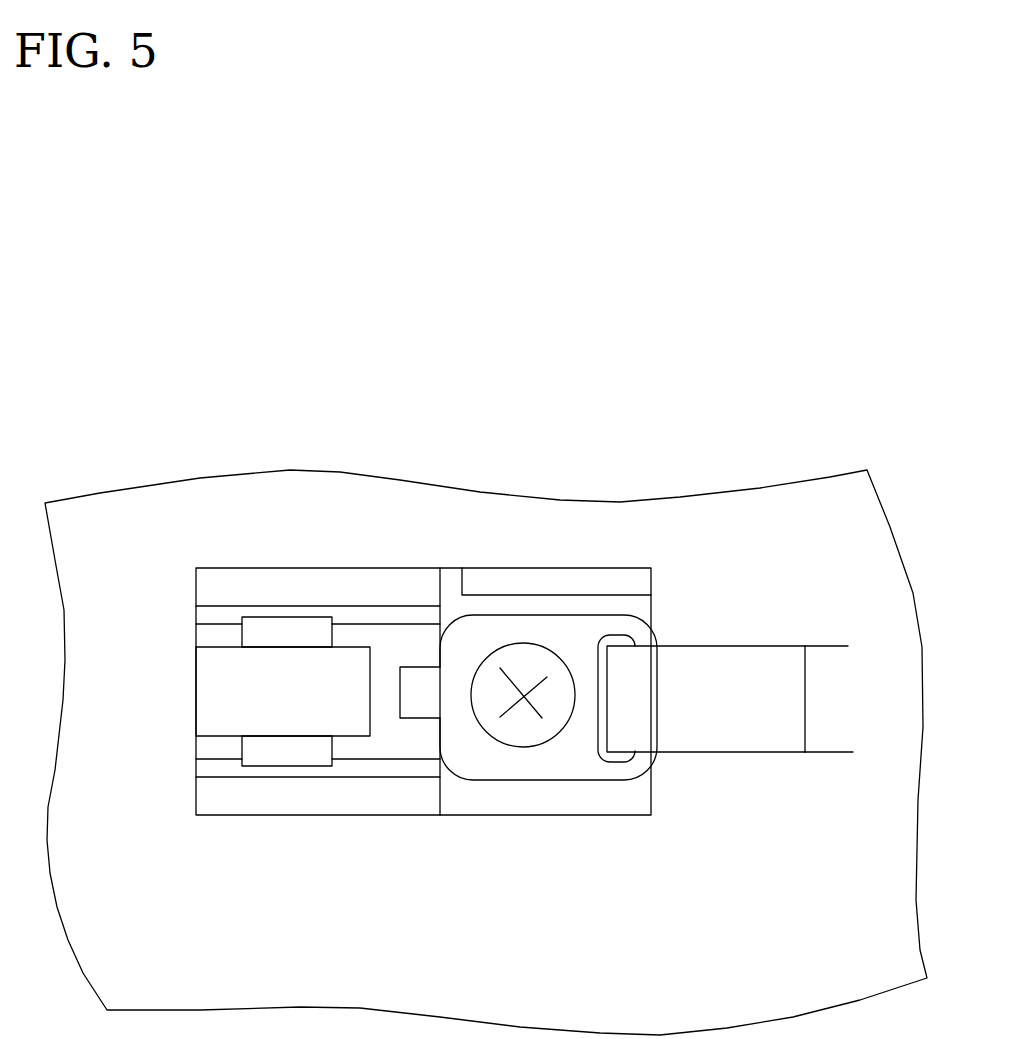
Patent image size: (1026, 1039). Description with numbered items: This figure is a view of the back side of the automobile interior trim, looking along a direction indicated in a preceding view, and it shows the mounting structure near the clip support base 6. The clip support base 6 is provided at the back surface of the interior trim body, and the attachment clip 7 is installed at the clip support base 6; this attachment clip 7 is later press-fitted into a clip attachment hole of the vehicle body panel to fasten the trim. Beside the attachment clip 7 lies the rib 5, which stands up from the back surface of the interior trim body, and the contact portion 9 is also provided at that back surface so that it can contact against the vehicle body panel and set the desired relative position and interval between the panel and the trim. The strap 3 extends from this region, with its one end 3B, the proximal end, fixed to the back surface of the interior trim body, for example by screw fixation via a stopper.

The strap 3 is at (837, 632).
The one end of the strap 3B is at (733, 646).
The rib 5 is at (582, 580).
The clip support base 6 is at (180, 828).
The attachment clip 7 is at (205, 703).
The contact portion 9 is at (293, 580).